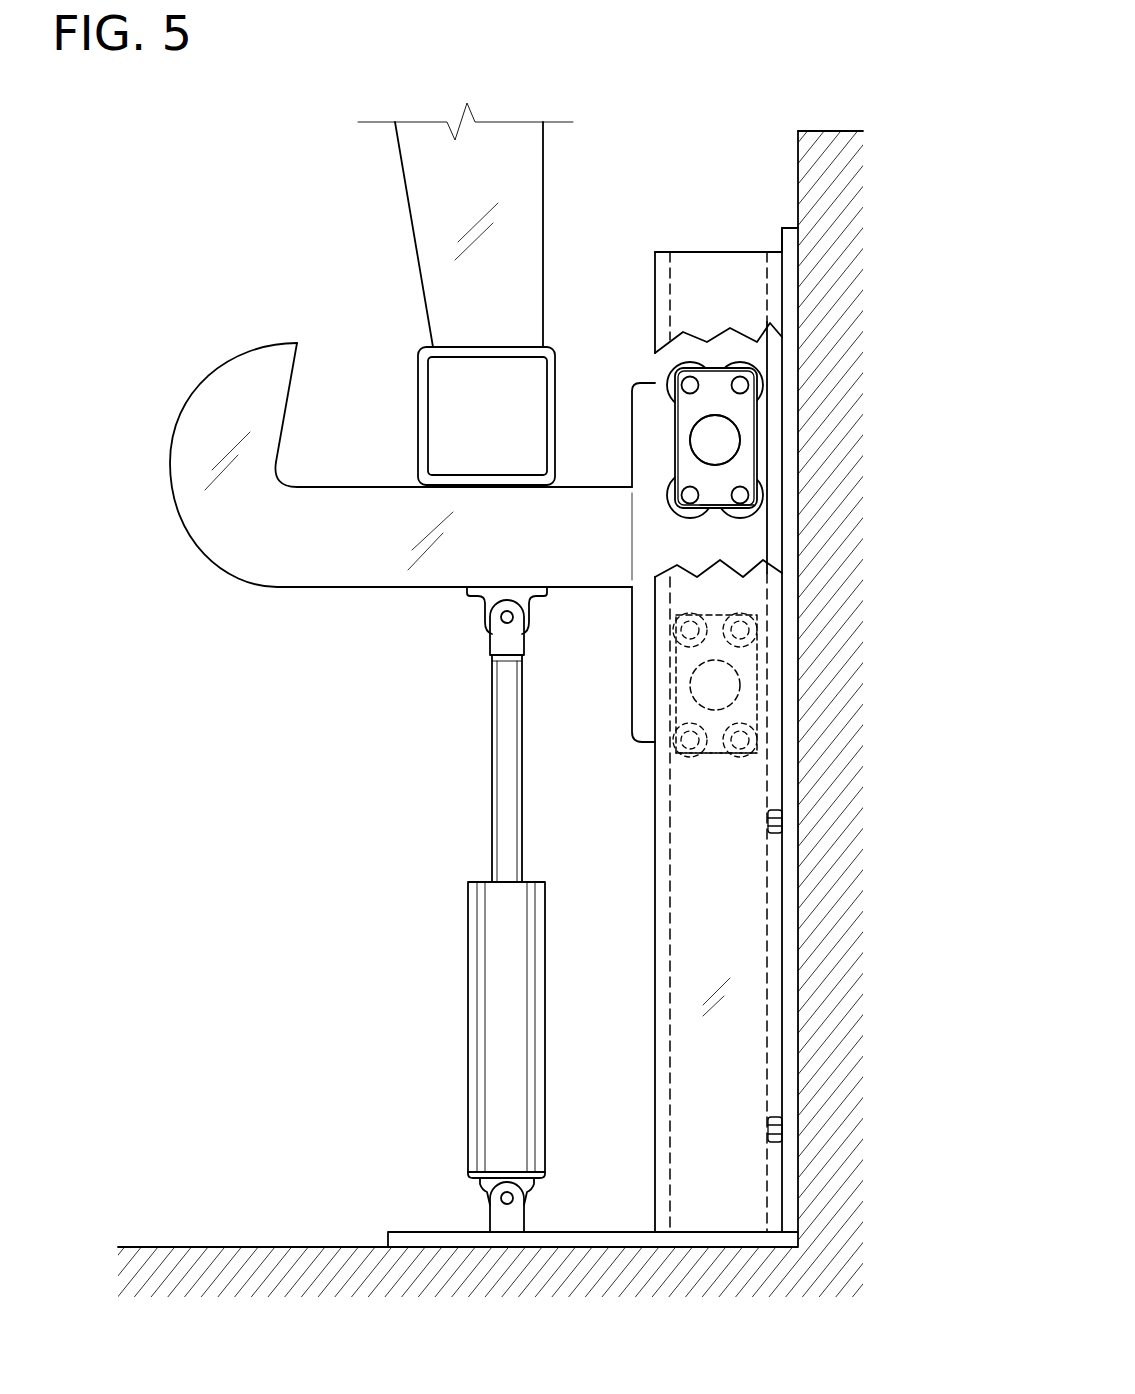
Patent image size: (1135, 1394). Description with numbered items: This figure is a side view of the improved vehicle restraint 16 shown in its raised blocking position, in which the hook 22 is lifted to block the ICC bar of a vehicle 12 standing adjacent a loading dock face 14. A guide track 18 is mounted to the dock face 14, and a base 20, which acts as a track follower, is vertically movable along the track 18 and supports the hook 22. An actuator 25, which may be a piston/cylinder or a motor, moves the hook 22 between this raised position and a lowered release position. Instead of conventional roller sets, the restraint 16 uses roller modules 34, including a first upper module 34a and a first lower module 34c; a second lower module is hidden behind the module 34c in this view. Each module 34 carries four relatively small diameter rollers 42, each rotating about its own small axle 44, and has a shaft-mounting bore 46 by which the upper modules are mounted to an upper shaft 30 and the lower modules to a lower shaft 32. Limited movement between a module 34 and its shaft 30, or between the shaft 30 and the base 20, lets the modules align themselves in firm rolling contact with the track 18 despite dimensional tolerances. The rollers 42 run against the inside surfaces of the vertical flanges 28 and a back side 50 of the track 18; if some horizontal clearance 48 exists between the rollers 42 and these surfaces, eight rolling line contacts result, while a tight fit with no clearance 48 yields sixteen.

The vehicle 12 is at (410, 212).
The loading dock face 14 is at (797, 160).
The improved vehicle restraint 16 is at (344, 462).
The guide track 18 is at (726, 681).
The base 20 is at (632, 663).
The hook 22 is at (267, 587).
The actuator 25 is at (468, 982).
The vertical flanges 28 is at (670, 298).
The upper shaft 30 is at (740, 442).
The lower shaft 32 is at (742, 692).
The roller module 34 is at (750, 635).
The first upper module 34a is at (742, 468).
The first lower module 34c is at (742, 660).
The rollers 42 is at (756, 603).
The axle 44 is at (690, 397).
The shaft-mounting bore 46 is at (679, 443).
The horizontal clearance 48 is at (760, 763).
The back side 50 is at (767, 1037).